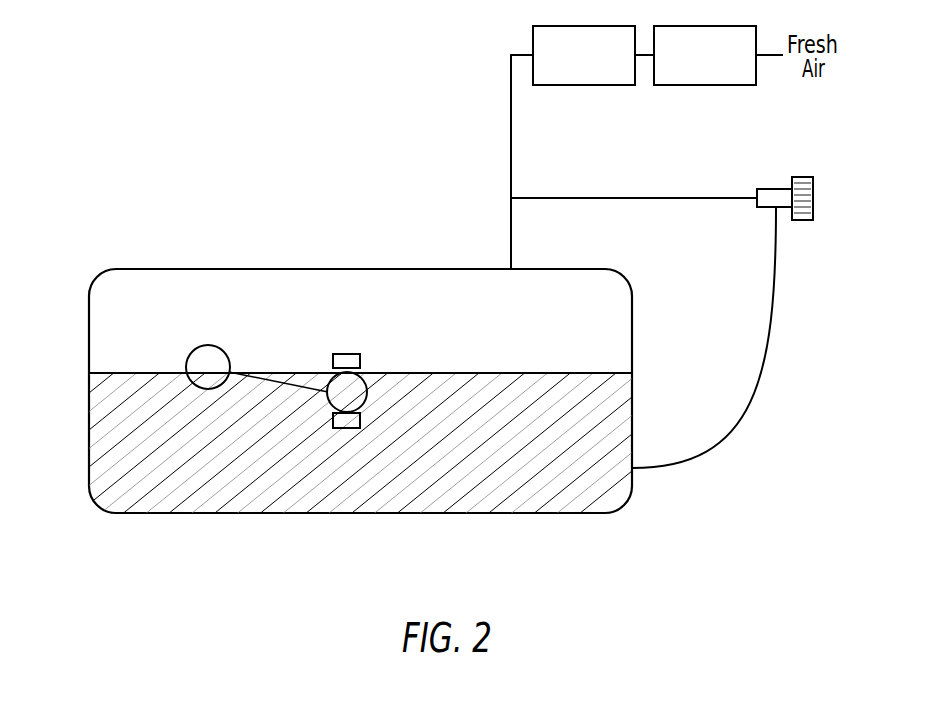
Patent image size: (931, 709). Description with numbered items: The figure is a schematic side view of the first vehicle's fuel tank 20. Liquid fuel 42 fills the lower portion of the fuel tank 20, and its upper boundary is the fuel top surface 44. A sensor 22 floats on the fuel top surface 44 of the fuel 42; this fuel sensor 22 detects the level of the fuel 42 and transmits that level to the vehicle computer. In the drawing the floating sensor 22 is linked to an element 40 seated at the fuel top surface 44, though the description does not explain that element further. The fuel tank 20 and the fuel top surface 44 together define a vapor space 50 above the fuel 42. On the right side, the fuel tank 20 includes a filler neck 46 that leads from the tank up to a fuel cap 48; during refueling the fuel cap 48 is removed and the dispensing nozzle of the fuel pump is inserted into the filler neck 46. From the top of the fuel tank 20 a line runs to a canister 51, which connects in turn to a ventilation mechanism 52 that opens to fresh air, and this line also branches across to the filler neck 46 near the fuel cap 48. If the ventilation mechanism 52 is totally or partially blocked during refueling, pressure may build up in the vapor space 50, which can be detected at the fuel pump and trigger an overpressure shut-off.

The fuel tank 20 is at (110, 265).
The vapor space 50 is at (137, 327).
The sensor 22 is at (208, 357).
The valve 40 is at (355, 390).
The fuel 42 is at (545, 497).
The fuel top surface 44 is at (603, 370).
The filler neck 46 is at (720, 437).
The fuel cap 48 is at (803, 177).
The canister 51 is at (584, 55).
The ventilation mechanism 52 is at (705, 55).